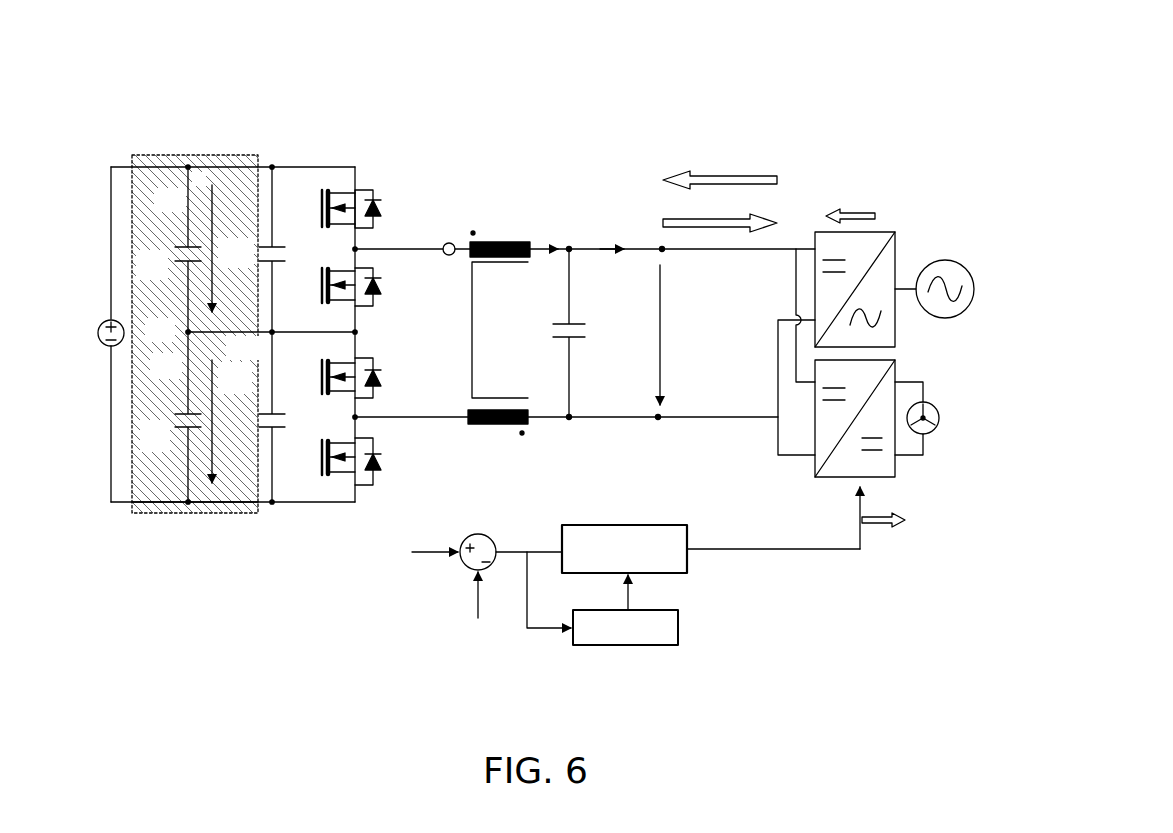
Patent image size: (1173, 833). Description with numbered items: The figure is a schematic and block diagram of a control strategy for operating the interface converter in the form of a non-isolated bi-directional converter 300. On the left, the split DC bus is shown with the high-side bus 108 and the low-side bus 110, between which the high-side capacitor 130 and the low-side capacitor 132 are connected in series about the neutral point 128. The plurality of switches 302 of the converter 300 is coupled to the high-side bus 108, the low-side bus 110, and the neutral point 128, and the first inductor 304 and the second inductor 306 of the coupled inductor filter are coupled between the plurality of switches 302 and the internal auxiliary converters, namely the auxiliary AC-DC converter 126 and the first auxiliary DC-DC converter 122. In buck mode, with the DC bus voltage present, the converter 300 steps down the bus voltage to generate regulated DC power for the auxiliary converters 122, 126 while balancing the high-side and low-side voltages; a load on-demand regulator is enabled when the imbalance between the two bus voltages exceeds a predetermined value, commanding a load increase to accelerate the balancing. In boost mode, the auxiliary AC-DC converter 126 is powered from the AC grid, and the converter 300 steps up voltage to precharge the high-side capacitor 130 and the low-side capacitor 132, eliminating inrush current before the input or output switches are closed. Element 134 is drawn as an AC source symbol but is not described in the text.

The non-isolated bi-directional converter 300 is at (895, 88).
The high-side bus 108 is at (198, 166).
The low-side bus 110 is at (226, 506).
The neutral point 128 is at (192, 334).
The high-side capacitor 130 is at (181, 246).
The low-side capacitor 132 is at (178, 413).
The plurality of switches 302 is at (322, 189).
The first inductor 304 is at (521, 241).
The second inductor 306 is at (497, 426).
The auxiliary AC-DC converter 126 is at (891, 268).
The first auxiliary DC-DC converter 122 is at (882, 456).
The AC load 134 is at (951, 276).